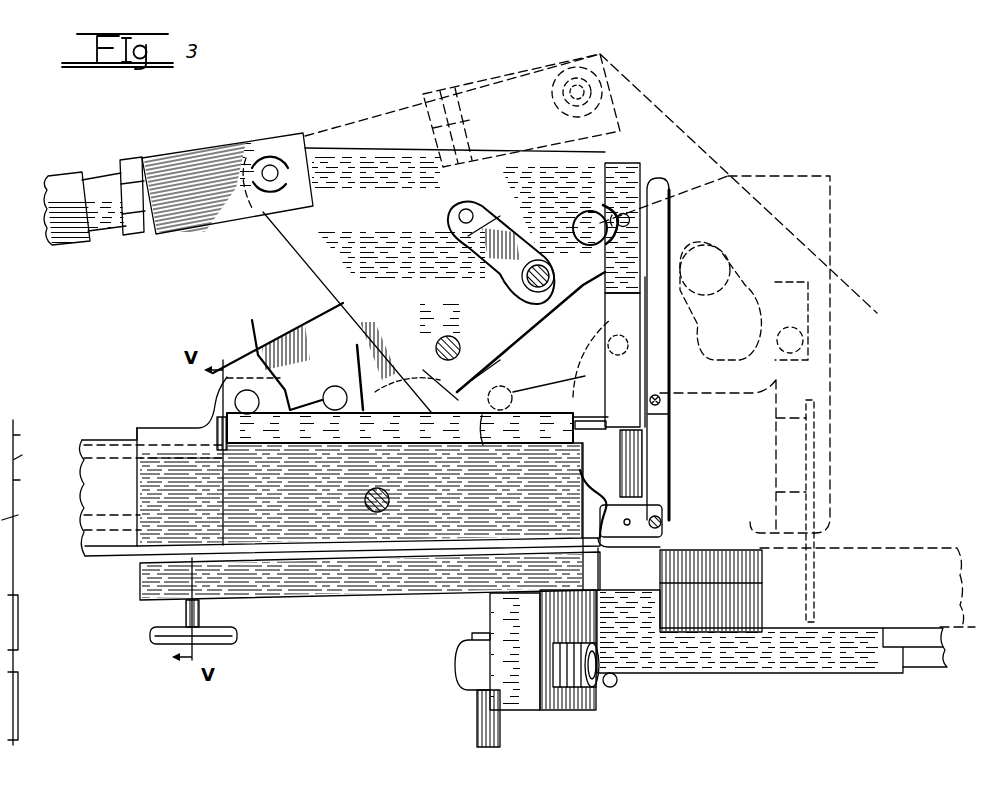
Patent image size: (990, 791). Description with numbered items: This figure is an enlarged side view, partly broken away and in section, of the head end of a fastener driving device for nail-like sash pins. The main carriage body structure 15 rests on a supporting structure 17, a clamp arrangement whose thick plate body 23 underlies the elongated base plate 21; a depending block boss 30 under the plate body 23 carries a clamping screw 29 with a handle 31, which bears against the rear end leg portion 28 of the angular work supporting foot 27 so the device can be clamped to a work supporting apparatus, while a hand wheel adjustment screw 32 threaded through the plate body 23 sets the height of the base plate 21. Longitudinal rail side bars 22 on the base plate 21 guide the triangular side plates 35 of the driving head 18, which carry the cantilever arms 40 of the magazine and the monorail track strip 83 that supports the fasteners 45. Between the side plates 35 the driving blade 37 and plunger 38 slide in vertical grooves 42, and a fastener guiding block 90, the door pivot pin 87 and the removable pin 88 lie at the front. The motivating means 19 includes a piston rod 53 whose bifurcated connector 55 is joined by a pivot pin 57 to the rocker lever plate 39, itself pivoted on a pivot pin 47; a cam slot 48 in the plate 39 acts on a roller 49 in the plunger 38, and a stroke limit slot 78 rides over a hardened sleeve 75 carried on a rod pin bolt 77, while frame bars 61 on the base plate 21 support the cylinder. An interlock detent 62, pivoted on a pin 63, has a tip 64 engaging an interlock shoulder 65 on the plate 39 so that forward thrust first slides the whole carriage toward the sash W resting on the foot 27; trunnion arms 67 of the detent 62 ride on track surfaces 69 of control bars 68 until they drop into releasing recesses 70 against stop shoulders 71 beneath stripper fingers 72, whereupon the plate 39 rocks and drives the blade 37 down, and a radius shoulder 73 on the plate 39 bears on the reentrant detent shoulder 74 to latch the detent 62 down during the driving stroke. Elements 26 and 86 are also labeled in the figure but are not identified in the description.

The main carriage body structure 15 is at (115, 570).
The supporting and attaching structure 17 is at (447, 628).
The fastener driving head assembly 18 is at (230, 348).
The motivating means 19 is at (345, 87).
The base plate 21 is at (97, 553).
The head supporting and guide rail side block bars 22 is at (150, 495).
The plate body 23 is at (395, 597).
The pin 26 is at (388, 493).
The angular work supporting foot 27 is at (782, 664).
The rear end leg portion 28 is at (752, 612).
The clamping screw 29 is at (617, 682).
The depending block boss 30 is at (582, 705).
The handle 31 is at (500, 740).
The hand wheel adjustment screw 32 is at (233, 637).
The side plates 35 is at (287, 333).
The fastener driving blade 37 is at (633, 323).
The blade driving plunger 38 is at (635, 165).
The rocker lever plate 39 is at (433, 195).
The cantilever arms 40 is at (117, 437).
The vertical grooves 42 is at (607, 325).
The fasteners 45 is at (670, 476).
The pivot pin 47 is at (440, 348).
The cam slot 48 is at (598, 216).
The roller 49 is at (611, 211).
The piston rod 53 is at (108, 188).
The bifurcated connector 55 is at (205, 170).
The pivot pin 57 is at (272, 166).
The frame bars 61 is at (100, 473).
The interlock pawl finger detent 62 is at (357, 350).
The pivot pin 63 is at (240, 403).
The interlock tip 64 is at (627, 405).
The interlock shoulder 65 is at (460, 390).
The trunnion-like arms 67 is at (335, 395).
The control block bars 68 is at (350, 437).
The guide rail track surfaces 69 is at (362, 413).
The detent releasing recesses 70 is at (482, 415).
The stop shoulders 71 is at (553, 377).
The stripper finger portions 72 is at (513, 390).
The radius shoulder 73 is at (487, 380).
The control surface shoulder 74 is at (423, 370).
The hardened sleeve 75 is at (540, 252).
The supporting rod pin bolt 77 is at (532, 288).
The arcuate stroke limit slot 78 is at (466, 211).
The monorail suspension track plate strip 83 is at (582, 450).
The screw 86 is at (662, 416).
The pivot pin 87 is at (660, 400).
The transverse removable pin 88 is at (667, 527).
The fastener guiding block 90 is at (640, 540).
The sash W is at (906, 540).